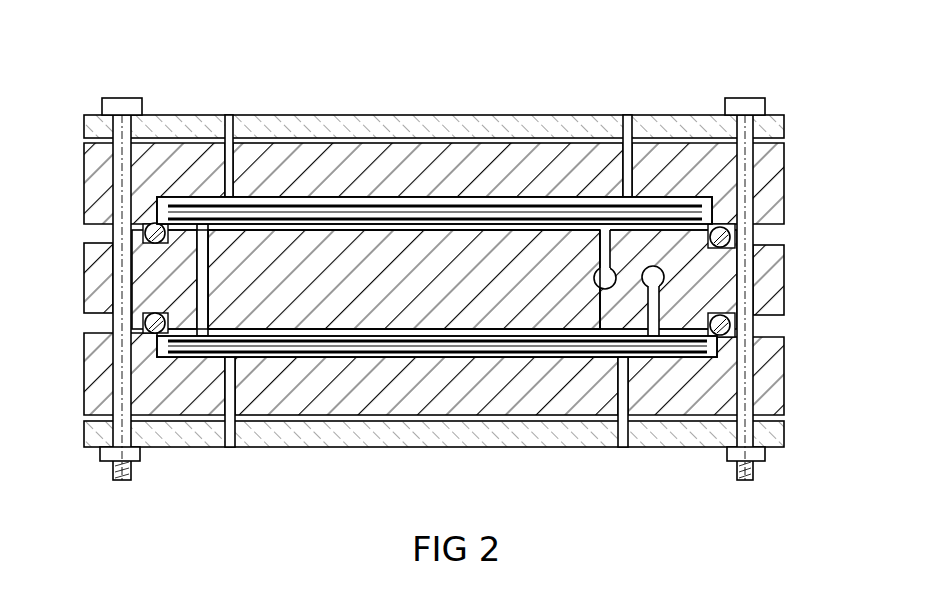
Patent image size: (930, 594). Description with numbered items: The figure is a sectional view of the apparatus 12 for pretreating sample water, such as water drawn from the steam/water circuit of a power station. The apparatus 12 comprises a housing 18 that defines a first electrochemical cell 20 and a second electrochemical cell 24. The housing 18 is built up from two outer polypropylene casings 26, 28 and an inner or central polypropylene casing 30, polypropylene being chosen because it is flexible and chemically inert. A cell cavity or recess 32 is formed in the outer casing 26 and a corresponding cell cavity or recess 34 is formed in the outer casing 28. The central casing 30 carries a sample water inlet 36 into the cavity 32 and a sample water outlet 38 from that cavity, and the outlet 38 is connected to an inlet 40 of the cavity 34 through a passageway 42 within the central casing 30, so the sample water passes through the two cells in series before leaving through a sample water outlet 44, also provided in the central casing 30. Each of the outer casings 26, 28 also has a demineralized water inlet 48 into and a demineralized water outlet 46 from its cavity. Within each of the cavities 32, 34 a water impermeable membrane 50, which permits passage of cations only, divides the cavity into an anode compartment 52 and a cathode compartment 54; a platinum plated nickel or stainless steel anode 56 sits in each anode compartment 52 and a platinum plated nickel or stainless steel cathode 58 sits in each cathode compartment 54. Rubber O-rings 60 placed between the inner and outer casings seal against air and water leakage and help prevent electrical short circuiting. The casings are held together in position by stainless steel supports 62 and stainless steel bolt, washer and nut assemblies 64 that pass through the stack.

The apparatus 12 is at (629, 73).
The housing 18 is at (800, 172).
The first electrochemical cell 20 is at (65, 137).
The second electrochemical cell 24 is at (74, 389).
The outer polypropylene casing 26 is at (470, 160).
The outer polypropylene casing 28 is at (488, 392).
The central polypropylene casing 30 is at (382, 318).
The cell cavity 32 is at (403, 195).
The cell cavity 34 is at (556, 360).
The sample water inlet 36 is at (593, 271).
The sample water outlet 38 is at (194, 250).
The inlet 40 is at (215, 309).
The passageway 42 is at (192, 281).
The sample water outlet 44 is at (668, 278).
The demineralized water outlet 46 is at (237, 108).
The demineralized water inlet 48 is at (634, 110).
The water impermeable membrane 50 is at (278, 209).
The anode compartment 52 is at (332, 325).
The cathode compartment 54 is at (515, 195).
The anode 56 is at (437, 229).
The cathode 58 is at (330, 203).
The rubber O-ring 60 is at (145, 234).
The stainless steel support 62 is at (162, 125).
The bolt, washer and nut assembly 64 is at (101, 467).